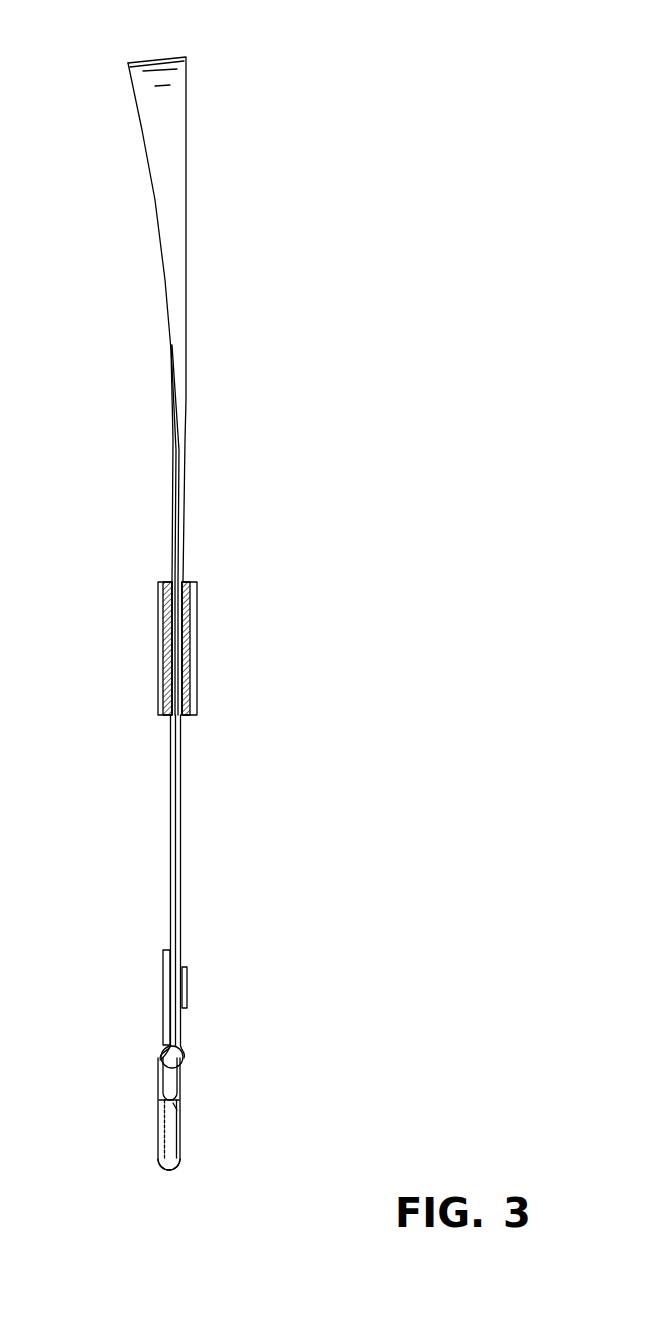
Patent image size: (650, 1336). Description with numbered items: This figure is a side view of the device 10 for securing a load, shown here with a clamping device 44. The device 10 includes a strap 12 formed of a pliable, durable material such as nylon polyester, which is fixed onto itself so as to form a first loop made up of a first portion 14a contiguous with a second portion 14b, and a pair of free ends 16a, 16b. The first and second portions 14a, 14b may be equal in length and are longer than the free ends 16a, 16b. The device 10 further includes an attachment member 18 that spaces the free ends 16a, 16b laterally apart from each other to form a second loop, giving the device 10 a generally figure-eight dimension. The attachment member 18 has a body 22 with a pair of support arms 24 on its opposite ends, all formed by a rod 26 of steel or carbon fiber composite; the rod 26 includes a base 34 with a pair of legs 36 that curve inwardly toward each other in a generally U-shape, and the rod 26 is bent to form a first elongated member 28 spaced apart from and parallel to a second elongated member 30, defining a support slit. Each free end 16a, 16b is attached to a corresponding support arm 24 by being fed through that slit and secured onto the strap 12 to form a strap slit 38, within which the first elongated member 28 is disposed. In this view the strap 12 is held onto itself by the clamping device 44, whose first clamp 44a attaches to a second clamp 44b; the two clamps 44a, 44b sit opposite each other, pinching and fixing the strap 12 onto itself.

The device 10 is at (100, 57).
The strap 12 is at (236, 130).
The first portion 14a is at (186, 404).
The second portion 14b is at (170, 489).
The free end 16a is at (170, 810).
The free end 16b is at (181, 795).
The attachment member 18 is at (132, 1173).
The body 22 is at (158, 1190).
The support arm 24 is at (186, 1072).
The rod 26 is at (192, 1135).
The first elongated member 28 is at (160, 1060).
The second elongated member 30 is at (163, 1110).
The base 34 is at (178, 1167).
The leg 36 is at (173, 1112).
The strap slit 38 is at (180, 1052).
The clamping device 44 is at (172, 639).
The first clamp 44a is at (157, 655).
The second clamp 44b is at (197, 646).